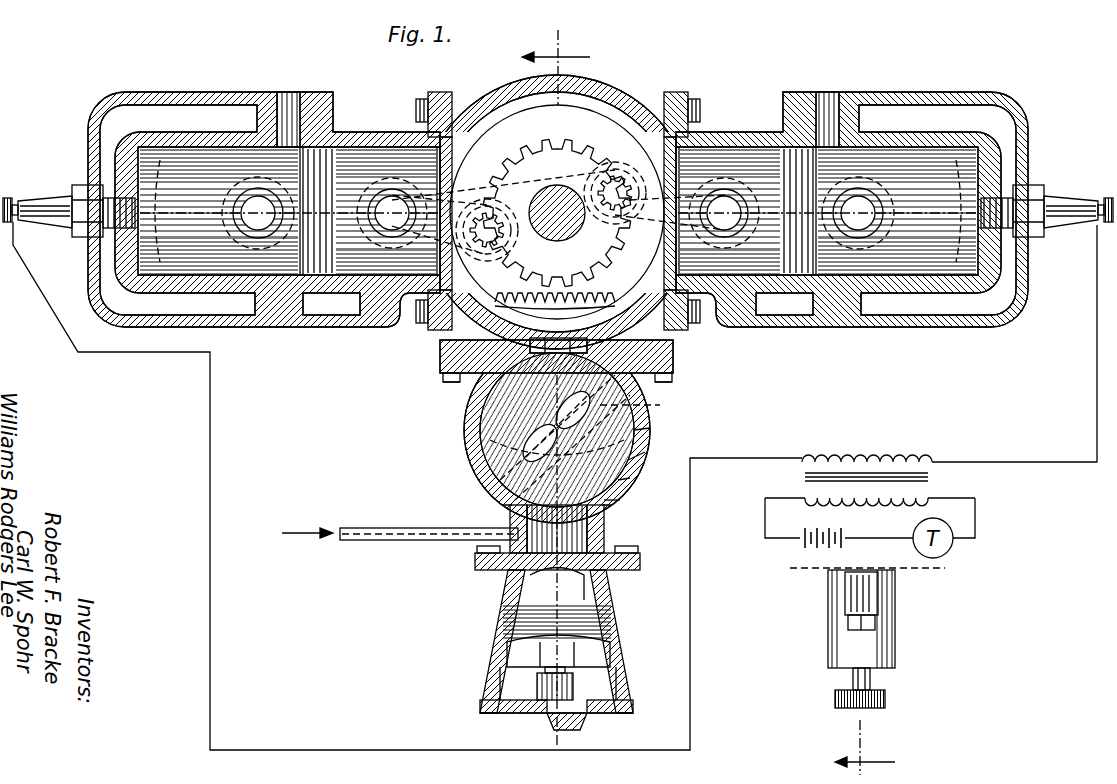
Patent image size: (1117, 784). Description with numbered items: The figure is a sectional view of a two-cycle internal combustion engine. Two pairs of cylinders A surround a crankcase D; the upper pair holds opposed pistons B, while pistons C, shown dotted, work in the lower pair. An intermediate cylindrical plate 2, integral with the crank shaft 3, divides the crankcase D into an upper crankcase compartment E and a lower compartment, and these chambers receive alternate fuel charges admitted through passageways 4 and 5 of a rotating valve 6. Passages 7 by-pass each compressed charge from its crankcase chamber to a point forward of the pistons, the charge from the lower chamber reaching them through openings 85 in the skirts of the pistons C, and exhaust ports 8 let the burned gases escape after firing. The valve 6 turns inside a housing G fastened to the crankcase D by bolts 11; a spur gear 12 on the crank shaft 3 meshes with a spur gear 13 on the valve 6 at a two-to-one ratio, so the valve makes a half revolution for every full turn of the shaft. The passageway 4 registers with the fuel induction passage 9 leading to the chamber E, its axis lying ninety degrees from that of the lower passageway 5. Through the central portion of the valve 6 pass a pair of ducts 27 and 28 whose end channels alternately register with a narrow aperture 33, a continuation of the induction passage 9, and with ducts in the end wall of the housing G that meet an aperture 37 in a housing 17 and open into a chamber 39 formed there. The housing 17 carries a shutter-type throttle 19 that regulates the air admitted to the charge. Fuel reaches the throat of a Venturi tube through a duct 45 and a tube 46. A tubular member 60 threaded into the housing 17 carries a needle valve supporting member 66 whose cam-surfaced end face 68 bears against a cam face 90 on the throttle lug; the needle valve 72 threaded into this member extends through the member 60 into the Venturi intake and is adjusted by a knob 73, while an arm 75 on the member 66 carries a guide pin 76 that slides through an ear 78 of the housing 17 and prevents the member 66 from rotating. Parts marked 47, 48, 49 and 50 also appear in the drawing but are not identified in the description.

The cylinders A is at (198, 160).
The pistons B is at (358, 160).
The pistons C is at (172, 230).
The crankcase D is at (632, 108).
The upper crankcase compartment E is at (485, 108).
The housing G is at (620, 500).
The intermediate cylindrical plate 2 is at (705, 402).
The crank shaft 3 is at (541, 186).
The passageway 4 is at (582, 430).
The passageway 5 is at (645, 450).
The rotating valve 6 is at (648, 423).
The passages 7 is at (345, 300).
The exhaust ports 8 is at (290, 100).
The fuel induction passage 9 is at (493, 330).
The bolts 11 is at (447, 378).
The spur gear 12 is at (600, 170).
The spur gear 13 is at (637, 333).
The housing 17 is at (498, 686).
The throttle 19 is at (580, 727).
The duct 27 is at (630, 478).
The duct 28 is at (463, 437).
The narrow aperture 33 is at (530, 395).
The aperture 37 is at (588, 530).
The chamber 39 is at (600, 592).
The duct 45 is at (486, 590).
The tube 46 is at (432, 541).
The valve passage 47 is at (478, 460).
The valve passage 48 is at (655, 410).
The neck passage 49 is at (518, 506).
The valve port 50 is at (630, 390).
The tubular member 60 is at (567, 660).
The needle valve supporting member 66 is at (896, 632).
The end face 68 is at (848, 590).
The needle valve 72 is at (870, 680).
The knob 73 is at (886, 702).
The arm 75 is at (840, 600).
The pin 76 is at (540, 713).
The ear 78 is at (575, 697).
The openings 85 is at (372, 300).
The cam face 90 is at (830, 578).